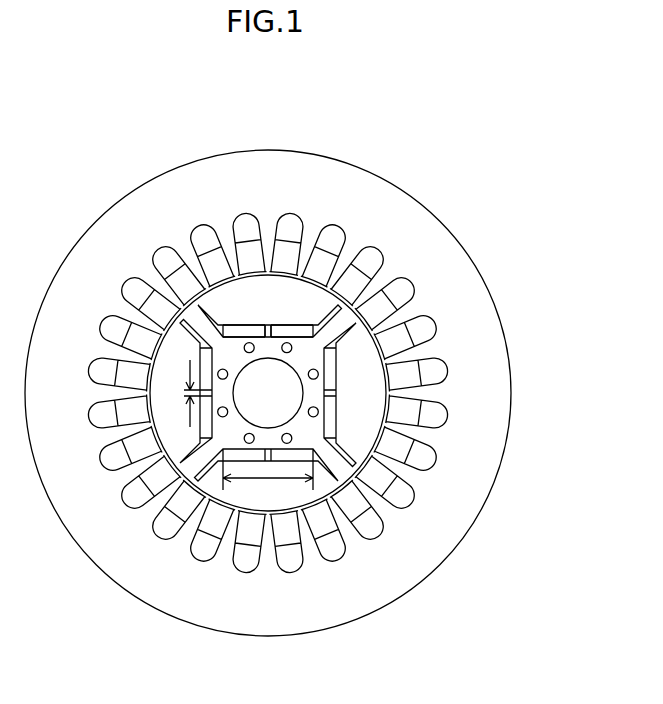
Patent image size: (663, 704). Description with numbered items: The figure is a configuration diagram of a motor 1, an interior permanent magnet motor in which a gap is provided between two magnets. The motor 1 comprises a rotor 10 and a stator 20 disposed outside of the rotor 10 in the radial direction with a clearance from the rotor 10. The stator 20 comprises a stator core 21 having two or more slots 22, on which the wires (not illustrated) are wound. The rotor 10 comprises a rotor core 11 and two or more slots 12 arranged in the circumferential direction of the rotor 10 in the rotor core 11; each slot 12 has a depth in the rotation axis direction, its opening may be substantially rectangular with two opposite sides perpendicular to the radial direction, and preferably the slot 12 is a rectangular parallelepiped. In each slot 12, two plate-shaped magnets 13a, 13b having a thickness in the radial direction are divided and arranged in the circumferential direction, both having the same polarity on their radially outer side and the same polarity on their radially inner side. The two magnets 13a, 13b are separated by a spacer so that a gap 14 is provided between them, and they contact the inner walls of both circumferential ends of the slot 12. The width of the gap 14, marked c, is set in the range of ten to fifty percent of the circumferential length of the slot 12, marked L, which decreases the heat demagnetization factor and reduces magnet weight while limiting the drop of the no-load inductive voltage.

The motor 1 is at (449, 152).
The rotor 10 is at (375, 403).
The rotor core 11 is at (367, 428).
The slot 12 is at (302, 330).
The magnet 13a is at (244, 333).
The magnet 13b is at (294, 333).
The gap 14 is at (268, 333).
The stator 20 is at (355, 605).
The stator core 21 is at (233, 608).
The slot 22 is at (167, 528).